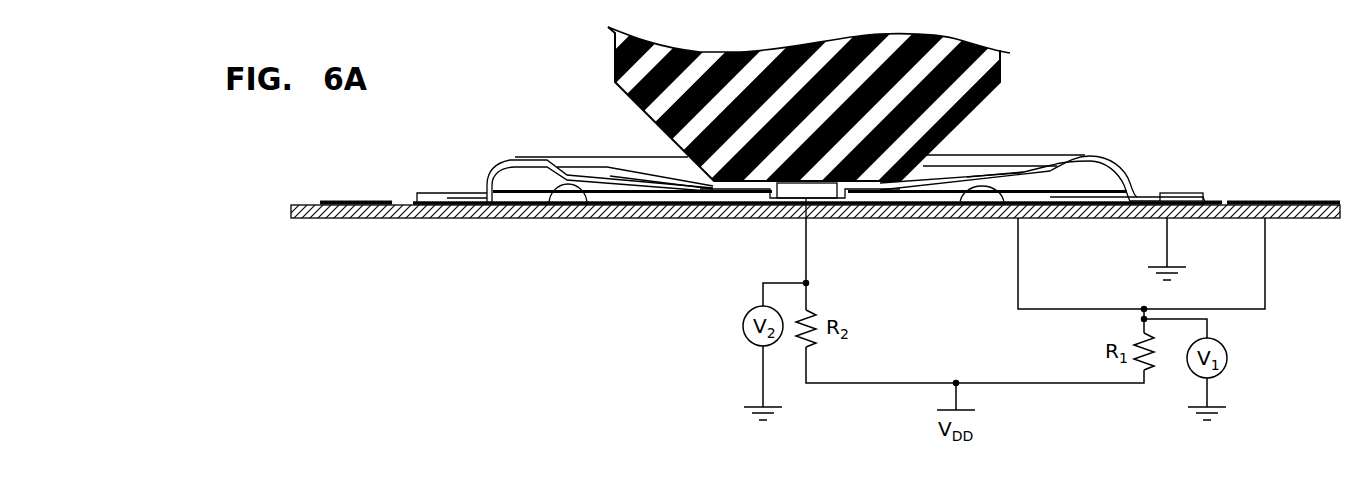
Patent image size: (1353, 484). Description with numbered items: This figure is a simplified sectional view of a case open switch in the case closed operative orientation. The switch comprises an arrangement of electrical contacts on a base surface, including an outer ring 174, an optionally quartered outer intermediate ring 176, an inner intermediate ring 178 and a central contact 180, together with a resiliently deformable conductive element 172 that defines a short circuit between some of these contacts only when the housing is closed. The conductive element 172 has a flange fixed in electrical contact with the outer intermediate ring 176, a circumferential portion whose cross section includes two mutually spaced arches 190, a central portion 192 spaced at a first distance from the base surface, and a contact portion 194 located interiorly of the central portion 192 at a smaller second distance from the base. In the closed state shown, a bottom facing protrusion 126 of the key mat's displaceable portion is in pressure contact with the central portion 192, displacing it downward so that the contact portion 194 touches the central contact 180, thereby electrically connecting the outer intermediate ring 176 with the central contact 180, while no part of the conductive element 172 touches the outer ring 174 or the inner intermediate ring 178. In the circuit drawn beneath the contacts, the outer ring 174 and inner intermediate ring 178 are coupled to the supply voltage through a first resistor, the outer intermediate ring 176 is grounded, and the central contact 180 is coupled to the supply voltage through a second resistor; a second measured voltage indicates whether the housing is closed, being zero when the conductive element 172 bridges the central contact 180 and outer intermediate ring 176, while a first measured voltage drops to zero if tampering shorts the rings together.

The bottom facing protrusion 126 is at (962, 95).
The resiliently deformable conductive element 172 is at (1093, 113).
The outer ring 174 is at (342, 202).
The outer intermediate ring 176 is at (410, 197).
The inner intermediate ring 178 is at (546, 200).
The central contact 180 is at (722, 212).
The arches 190 is at (508, 158).
The central portion 192 is at (637, 178).
The contact portion 194 is at (782, 218).